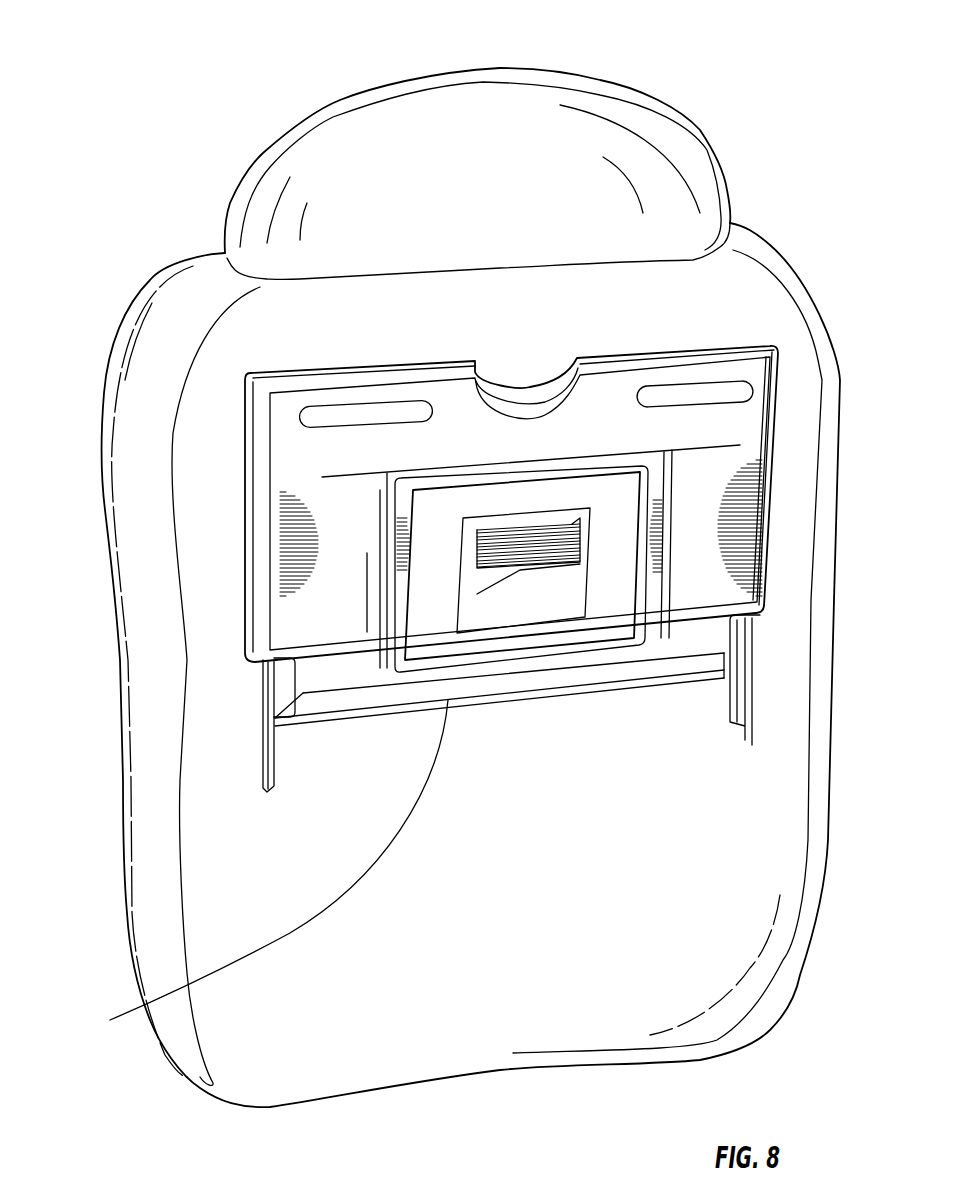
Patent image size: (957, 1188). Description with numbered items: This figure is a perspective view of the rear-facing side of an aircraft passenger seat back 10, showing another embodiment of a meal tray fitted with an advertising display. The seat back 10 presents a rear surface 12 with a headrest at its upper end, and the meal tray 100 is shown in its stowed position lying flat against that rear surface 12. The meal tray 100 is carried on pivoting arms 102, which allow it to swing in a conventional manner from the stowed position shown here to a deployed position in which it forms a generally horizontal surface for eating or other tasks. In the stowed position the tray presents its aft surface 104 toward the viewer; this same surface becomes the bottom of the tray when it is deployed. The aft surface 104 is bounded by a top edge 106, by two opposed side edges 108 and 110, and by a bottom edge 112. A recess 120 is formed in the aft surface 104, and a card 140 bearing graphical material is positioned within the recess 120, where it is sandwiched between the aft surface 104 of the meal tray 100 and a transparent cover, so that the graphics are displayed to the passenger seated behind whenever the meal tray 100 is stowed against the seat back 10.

The seat back 10 is at (266, 107).
The rear surface 12 is at (765, 290).
The meal tray 100 is at (228, 522).
The pivoting arms 102 is at (272, 724).
The aft surface 104 is at (728, 467).
The top edge 106 is at (290, 367).
The side edge 108 is at (245, 588).
The side edge 110 is at (764, 552).
The bottom edge 112 is at (110, 1020).
The recess 120 is at (655, 512).
The card 140 is at (593, 633).